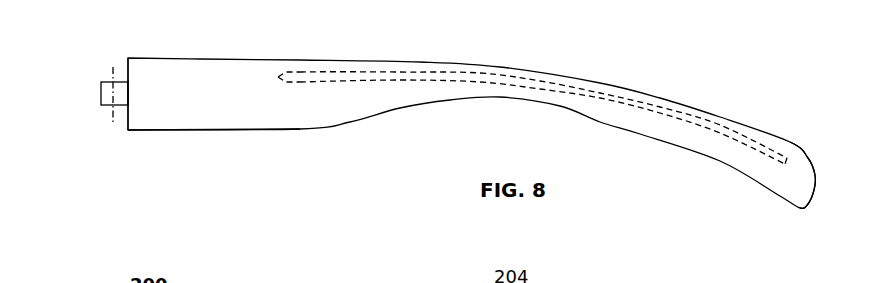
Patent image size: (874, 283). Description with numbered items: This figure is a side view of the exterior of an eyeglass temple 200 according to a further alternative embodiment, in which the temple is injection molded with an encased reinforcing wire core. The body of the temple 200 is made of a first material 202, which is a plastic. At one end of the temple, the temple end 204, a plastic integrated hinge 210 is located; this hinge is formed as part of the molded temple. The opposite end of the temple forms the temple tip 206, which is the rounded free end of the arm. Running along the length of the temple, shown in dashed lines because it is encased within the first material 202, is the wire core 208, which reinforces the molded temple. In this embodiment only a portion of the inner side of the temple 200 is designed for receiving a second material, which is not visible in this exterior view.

The temple 200 is at (618, 63).
The first material 202 is at (210, 77).
The temple end 204 is at (128, 131).
The temple tip 206 is at (812, 205).
The wire core 208 is at (395, 78).
The plastic integrated hinge 210 is at (106, 90).